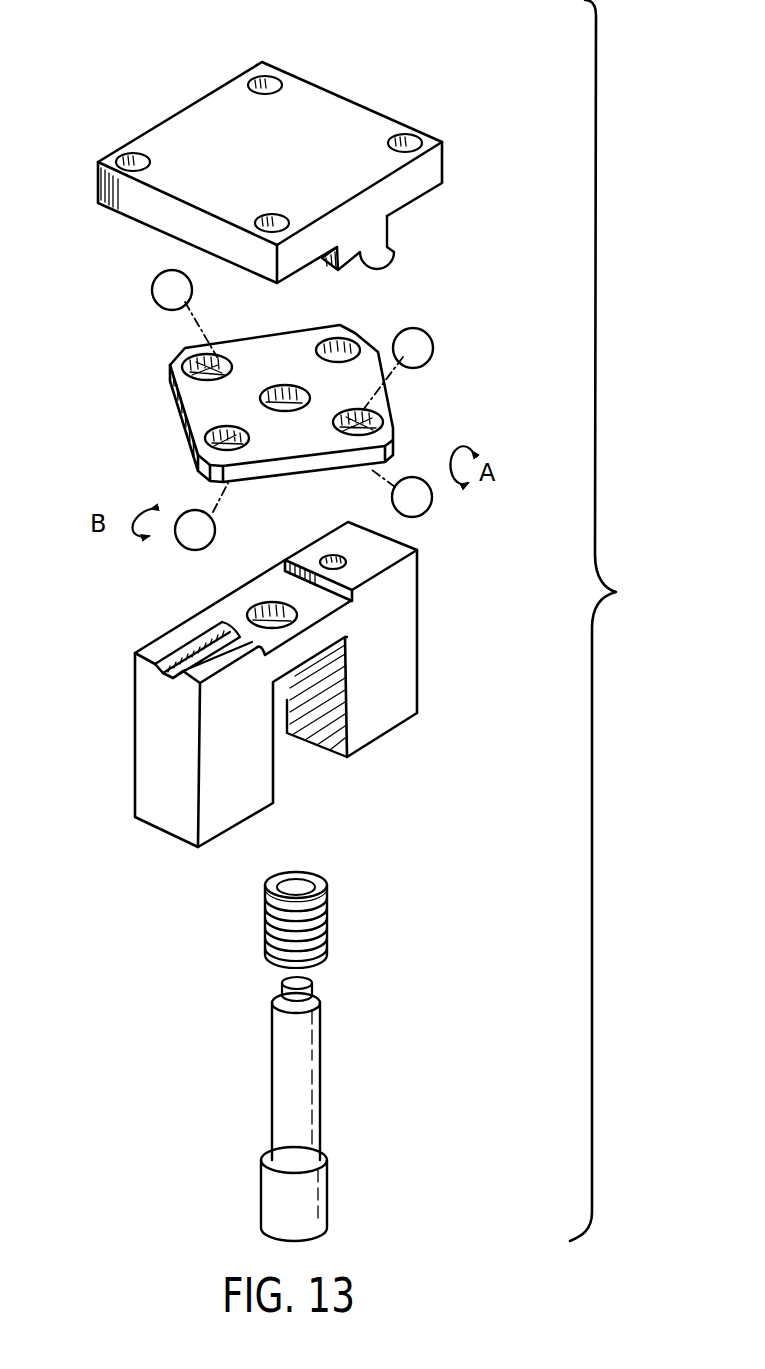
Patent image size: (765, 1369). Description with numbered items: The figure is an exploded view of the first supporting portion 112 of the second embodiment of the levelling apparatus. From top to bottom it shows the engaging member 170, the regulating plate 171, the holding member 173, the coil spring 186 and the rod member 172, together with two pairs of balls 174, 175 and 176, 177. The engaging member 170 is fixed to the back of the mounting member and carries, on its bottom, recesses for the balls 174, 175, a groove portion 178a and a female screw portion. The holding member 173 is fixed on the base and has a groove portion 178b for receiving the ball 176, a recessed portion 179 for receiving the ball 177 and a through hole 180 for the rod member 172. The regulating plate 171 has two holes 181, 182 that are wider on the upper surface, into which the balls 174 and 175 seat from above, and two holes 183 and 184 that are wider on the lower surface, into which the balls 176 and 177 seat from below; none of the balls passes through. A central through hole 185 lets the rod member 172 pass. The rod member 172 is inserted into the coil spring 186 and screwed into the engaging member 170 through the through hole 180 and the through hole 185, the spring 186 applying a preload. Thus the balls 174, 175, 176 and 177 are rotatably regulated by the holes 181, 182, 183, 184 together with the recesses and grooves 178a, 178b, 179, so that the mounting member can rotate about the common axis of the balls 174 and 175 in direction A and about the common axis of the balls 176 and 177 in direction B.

The first supporting portion 112 is at (489, 104).
The engaging member 170 is at (322, 128).
The regulating plate 171 is at (384, 394).
The rod member 172 is at (298, 1052).
The holding member 173 is at (420, 692).
The ball 174 is at (156, 284).
The ball 175 is at (430, 340).
The ball 176 is at (189, 541).
The ball 177 is at (428, 508).
The groove portion 178a is at (362, 250).
The groove portion 178b is at (183, 650).
The recessed portion 179 is at (345, 558).
The through hole 180 is at (268, 606).
The hole 181 is at (182, 358).
The hole 182 is at (390, 421).
The hole 183 is at (190, 433).
The hole 184 is at (353, 338).
The through hole 185 is at (291, 388).
The coil spring 186 is at (317, 880).